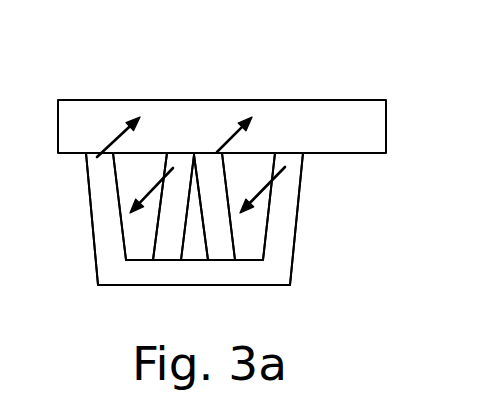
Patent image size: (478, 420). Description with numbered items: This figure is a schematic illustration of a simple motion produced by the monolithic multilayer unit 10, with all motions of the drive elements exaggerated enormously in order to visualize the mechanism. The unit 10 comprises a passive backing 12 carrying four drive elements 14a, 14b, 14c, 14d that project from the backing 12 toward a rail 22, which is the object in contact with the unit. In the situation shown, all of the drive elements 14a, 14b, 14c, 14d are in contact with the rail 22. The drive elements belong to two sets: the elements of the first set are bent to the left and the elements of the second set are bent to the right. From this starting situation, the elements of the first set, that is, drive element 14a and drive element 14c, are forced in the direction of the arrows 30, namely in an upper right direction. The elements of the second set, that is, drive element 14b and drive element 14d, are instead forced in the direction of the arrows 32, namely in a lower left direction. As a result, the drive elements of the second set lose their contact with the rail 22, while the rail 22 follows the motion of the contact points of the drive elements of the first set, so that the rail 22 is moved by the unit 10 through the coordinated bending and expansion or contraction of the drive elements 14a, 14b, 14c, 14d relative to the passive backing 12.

The monolithic multilayer unit 10 is at (325, 297).
The passive backing 12 is at (247, 273).
The drive element 14a is at (102, 211).
The drive element 14b is at (170, 225).
The drive element 14c is at (223, 230).
The drive element 14d is at (287, 212).
The rail 22 is at (320, 143).
The arrows 30 is at (109, 145).
The arrows 32 is at (163, 175).